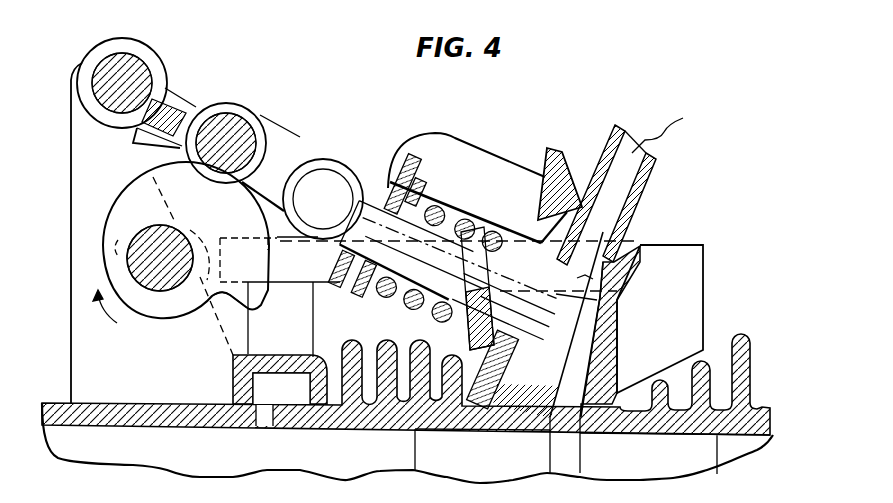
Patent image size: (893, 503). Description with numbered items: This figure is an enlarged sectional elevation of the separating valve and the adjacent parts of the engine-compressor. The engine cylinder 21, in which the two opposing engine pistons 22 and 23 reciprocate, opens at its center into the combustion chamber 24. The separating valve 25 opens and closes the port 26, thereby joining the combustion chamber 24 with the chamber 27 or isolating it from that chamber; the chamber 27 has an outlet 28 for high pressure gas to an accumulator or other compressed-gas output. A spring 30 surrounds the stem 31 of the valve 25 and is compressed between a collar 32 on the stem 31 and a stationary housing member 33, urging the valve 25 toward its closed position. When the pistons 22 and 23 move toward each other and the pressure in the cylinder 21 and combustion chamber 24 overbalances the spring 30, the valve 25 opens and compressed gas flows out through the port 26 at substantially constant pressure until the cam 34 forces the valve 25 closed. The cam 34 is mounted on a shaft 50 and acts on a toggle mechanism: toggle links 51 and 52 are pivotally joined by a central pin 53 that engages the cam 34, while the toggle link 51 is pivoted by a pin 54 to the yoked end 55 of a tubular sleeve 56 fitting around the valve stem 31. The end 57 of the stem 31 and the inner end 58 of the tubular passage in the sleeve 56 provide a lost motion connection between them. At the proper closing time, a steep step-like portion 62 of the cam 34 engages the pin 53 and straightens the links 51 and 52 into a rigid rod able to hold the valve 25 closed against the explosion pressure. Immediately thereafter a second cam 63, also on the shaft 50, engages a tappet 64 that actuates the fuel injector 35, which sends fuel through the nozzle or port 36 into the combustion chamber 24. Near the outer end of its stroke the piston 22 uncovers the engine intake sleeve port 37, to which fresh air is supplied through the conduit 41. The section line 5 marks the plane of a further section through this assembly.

The section line 5- 5 is at (78, 61).
The engine cylinder 21 is at (437, 424).
The engine piston 22 is at (314, 469).
The engine piston 23 is at (727, 456).
The combustion chamber 24 is at (577, 427).
The separating valve 25 is at (536, 380).
The port 26 is at (573, 274).
The chamber 27 is at (597, 300).
The outlet 28 is at (633, 173).
The spring 30 is at (438, 210).
The stem 31 is at (523, 330).
The collar 32 is at (516, 250).
The stationary housing member 33 is at (390, 172).
The cam 34 is at (212, 217).
The fuel injector 35 is at (668, 270).
The nozzle or port 36 is at (608, 343).
The engine intake sleeve port 37 is at (263, 428).
The conduit 41 is at (264, 397).
The shaft 50 is at (160, 222).
The toggle link 51 is at (293, 163).
The toggle link 52 is at (192, 96).
The central pin 53 is at (239, 126).
The pin 54 is at (314, 209).
The yoked end 55 is at (316, 239).
The tubular sleeve 56 is at (350, 289).
The end of stem 57 is at (392, 232).
The inner end of tubular passage 58 is at (412, 188).
The steep step-like portion 62 is at (233, 300).
The cam 63 is at (125, 250).
The tappet 64 is at (307, 284).